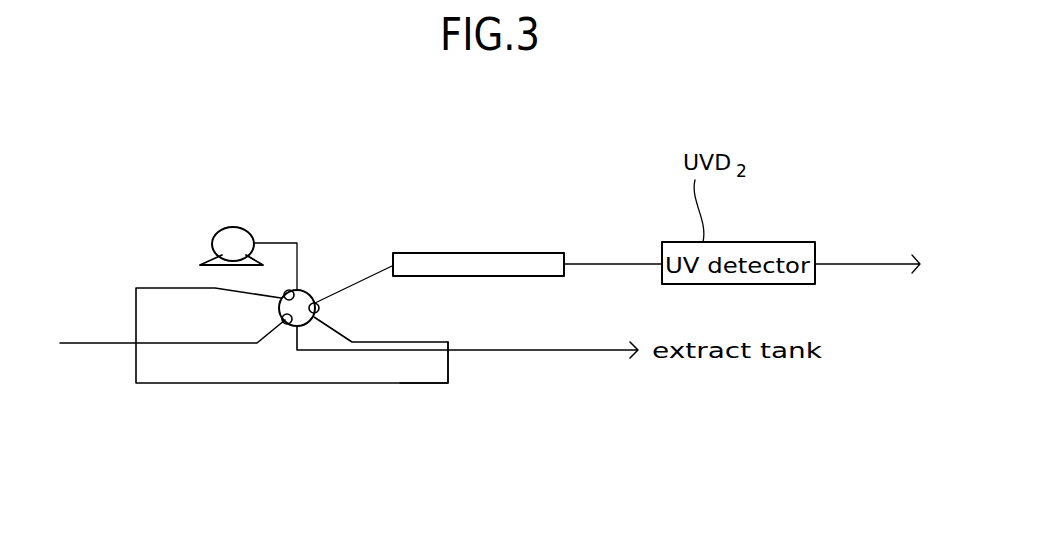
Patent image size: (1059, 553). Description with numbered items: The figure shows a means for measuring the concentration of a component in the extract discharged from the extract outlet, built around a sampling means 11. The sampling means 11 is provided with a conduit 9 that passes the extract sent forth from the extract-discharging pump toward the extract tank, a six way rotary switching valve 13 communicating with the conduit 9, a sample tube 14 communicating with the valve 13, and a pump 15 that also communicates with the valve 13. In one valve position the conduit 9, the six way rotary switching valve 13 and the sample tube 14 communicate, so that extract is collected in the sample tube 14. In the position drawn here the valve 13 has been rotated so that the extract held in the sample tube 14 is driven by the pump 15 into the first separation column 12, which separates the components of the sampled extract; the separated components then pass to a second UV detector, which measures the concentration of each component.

The conduit 9 is at (100, 344).
The sampling means 11 is at (262, 421).
The first separation column 12 is at (495, 253).
The six way rotary switching valve 13 is at (310, 291).
The sample tube 14 is at (415, 384).
The pump 15 is at (236, 227).